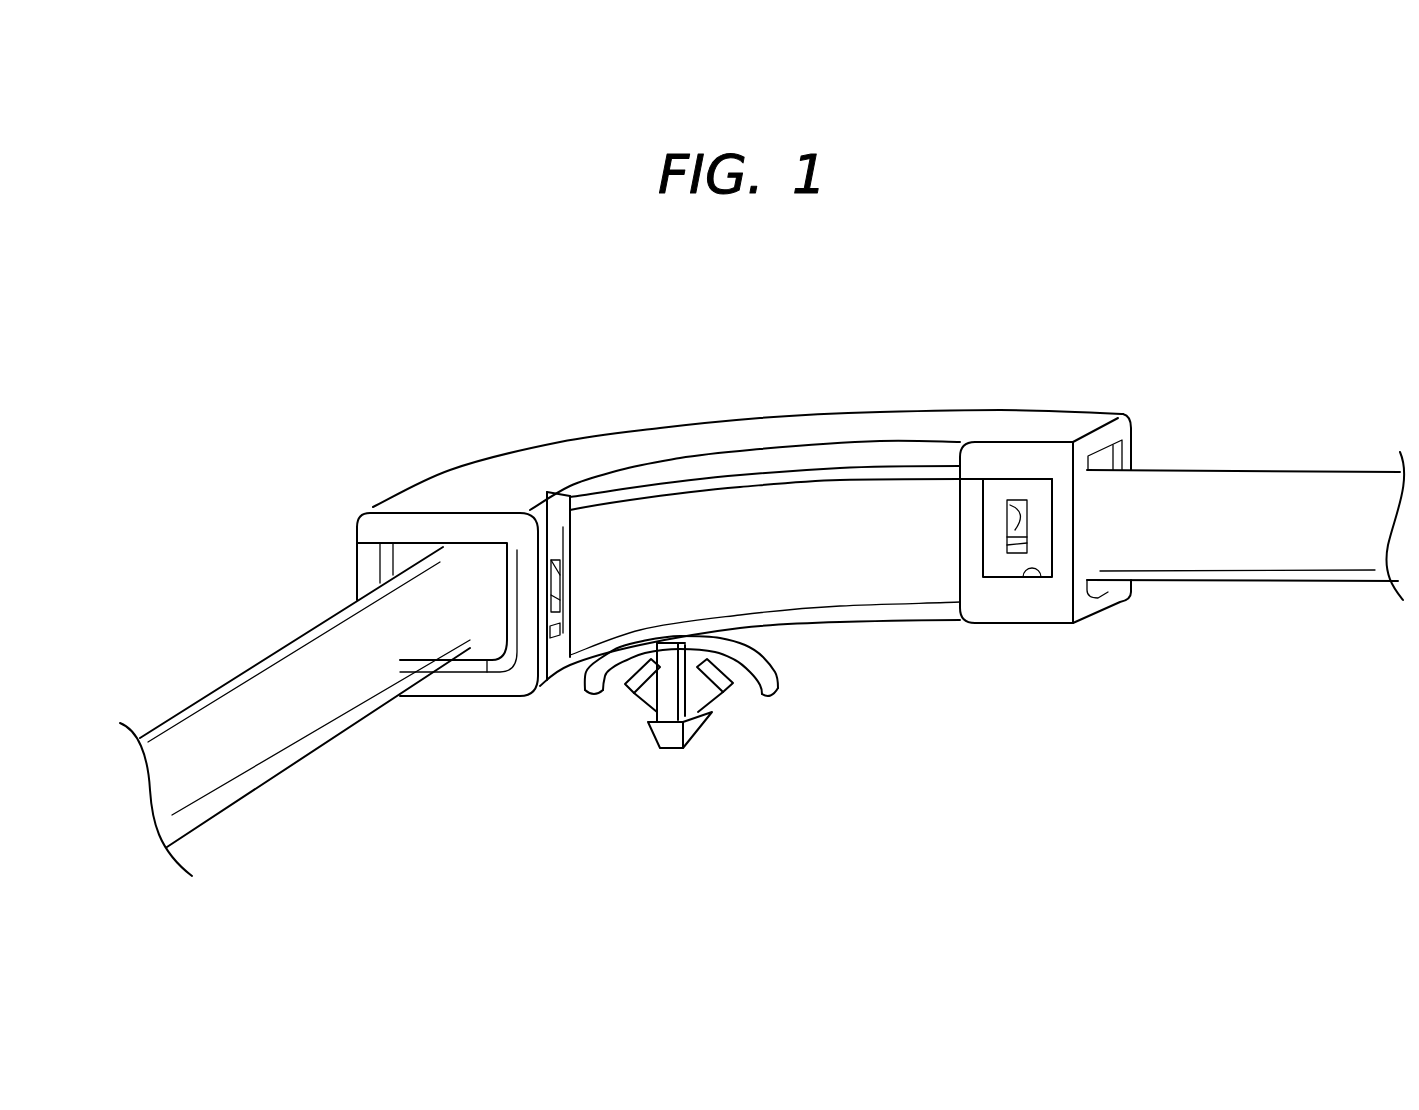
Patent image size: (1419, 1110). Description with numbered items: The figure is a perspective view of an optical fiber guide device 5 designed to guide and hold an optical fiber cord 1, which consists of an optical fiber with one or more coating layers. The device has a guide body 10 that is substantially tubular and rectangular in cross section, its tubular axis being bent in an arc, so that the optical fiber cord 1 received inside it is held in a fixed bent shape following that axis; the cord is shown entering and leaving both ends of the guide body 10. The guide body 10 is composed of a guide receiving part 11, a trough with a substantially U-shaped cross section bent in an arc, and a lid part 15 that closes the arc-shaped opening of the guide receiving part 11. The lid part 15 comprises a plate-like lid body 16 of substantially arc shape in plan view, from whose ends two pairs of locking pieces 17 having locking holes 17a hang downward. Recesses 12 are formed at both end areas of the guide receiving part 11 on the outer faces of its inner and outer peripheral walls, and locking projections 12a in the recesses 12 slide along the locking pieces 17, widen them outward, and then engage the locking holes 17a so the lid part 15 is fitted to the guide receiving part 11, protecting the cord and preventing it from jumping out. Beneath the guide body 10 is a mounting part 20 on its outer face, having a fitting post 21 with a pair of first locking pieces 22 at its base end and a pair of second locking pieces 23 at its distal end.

The optical fiber cord 1 is at (1258, 464).
The optical fiber guide device 5 is at (679, 412).
The guide body 10 is at (953, 303).
The guide receiving part 11 is at (817, 495).
The recess 12 is at (550, 682).
The locking projection 12a is at (557, 600).
The lid part 15 is at (930, 413).
The lid body 16 is at (620, 445).
The locking piece 17 is at (550, 537).
The locking hole 17a is at (557, 585).
The mounting part 20 is at (673, 748).
The fitting post 21 is at (663, 750).
The first locking piece 22 is at (592, 694).
The second locking piece 23 is at (637, 698).